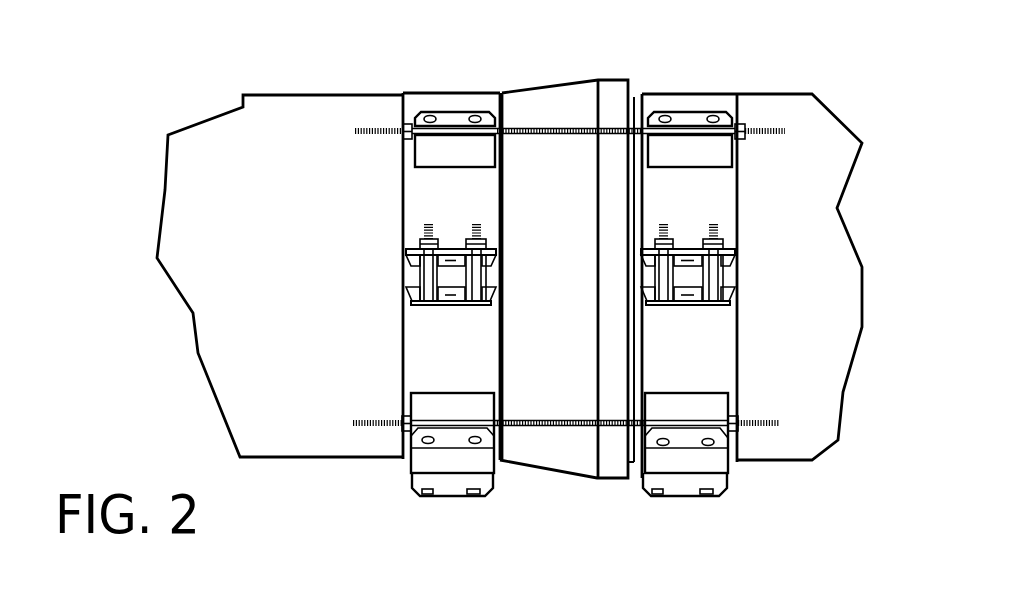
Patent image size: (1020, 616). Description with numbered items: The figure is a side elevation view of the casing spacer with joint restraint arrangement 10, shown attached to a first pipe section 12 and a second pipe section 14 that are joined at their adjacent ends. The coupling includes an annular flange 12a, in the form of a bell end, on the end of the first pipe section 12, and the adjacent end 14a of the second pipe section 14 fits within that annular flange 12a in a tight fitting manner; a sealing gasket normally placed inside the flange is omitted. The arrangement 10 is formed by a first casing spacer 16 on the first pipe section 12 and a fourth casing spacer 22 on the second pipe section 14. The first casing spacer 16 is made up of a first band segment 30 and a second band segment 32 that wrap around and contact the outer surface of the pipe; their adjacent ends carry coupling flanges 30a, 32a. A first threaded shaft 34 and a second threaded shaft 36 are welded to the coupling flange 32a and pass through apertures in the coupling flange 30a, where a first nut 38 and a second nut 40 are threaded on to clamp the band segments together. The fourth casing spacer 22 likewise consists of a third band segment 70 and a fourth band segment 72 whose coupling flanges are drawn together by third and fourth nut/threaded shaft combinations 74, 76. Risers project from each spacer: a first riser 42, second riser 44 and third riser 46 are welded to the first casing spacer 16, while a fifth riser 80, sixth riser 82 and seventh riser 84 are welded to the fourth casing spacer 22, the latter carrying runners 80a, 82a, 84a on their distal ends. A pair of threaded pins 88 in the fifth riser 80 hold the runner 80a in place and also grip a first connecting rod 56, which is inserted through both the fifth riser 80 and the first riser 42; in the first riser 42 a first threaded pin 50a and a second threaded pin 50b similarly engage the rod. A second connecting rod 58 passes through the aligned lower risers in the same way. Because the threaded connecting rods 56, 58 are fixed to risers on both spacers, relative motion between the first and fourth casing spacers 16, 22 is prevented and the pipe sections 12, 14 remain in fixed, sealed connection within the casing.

The casing spacer with joint restraint arrangement 10 is at (553, 62).
The first pipe section 12 is at (223, 258).
The annular flange 12a is at (577, 97).
The second pipe section 14 is at (820, 225).
The second panel flange 14a is at (633, 103).
The first casing spacer 16 is at (400, 110).
The fourth casing spacer 22 is at (697, 90).
The first band segment 30 is at (478, 212).
The coupling flange 30a is at (497, 250).
The second band segment 32 is at (470, 374).
The coupling flange 32a is at (495, 298).
The first threaded shaft 34 is at (420, 273).
The second threaded shaft 36 is at (473, 272).
The first nut 38 is at (419, 243).
The second nut 40 is at (481, 240).
The first riser 42 is at (420, 152).
The second riser 44 is at (428, 408).
The third riser 46 is at (426, 457).
The first threaded pin 50a is at (428, 113).
The second threaded pin 50b is at (474, 113).
The first connecting rod 56 is at (533, 127).
The second connecting rod 58 is at (553, 427).
The third band segment 70 is at (705, 212).
The fourth band segment 72 is at (712, 374).
The third nut/threaded shaft combination 74 is at (673, 278).
The fourth nut/threaded shaft combination 76 is at (668, 275).
The fifth riser 80 is at (722, 153).
The runner 80a is at (732, 120).
The sixth riser 82 is at (717, 405).
The runner 82a is at (715, 430).
The seventh riser 84 is at (727, 483).
The runner 84a is at (693, 495).
The threaded pins 88 is at (712, 115).